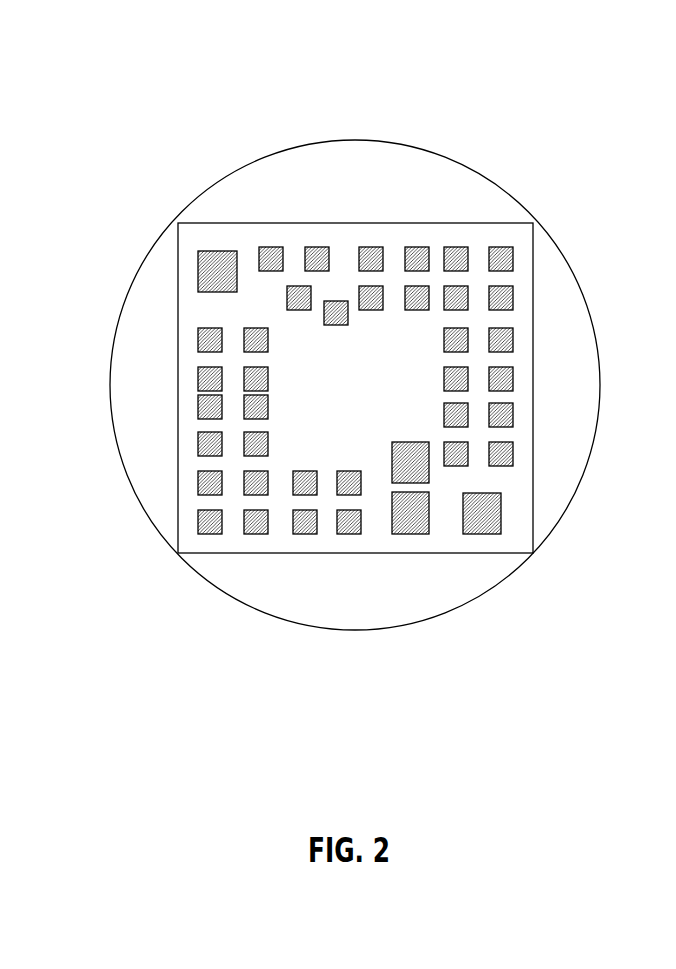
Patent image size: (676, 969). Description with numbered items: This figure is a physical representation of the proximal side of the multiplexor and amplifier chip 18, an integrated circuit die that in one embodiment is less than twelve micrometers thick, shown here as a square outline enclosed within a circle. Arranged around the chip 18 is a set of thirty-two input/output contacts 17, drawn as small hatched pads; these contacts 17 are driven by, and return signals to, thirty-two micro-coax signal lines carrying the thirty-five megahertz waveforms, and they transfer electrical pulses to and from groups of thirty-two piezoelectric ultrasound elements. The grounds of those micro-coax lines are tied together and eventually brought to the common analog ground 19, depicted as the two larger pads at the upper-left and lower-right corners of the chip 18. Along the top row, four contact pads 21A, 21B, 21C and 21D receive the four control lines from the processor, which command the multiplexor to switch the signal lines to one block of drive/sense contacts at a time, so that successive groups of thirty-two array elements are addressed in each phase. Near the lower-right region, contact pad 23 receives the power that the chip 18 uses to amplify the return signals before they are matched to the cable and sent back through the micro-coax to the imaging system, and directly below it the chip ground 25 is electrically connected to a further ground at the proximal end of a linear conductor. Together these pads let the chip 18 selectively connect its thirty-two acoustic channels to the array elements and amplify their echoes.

The input/output contacts 17 is at (513, 293).
The multiplexor chip 18 is at (463, 223).
The analog ground 19 is at (198, 272).
The contact pad 21A is at (264, 248).
The contact pad 21B is at (317, 247).
The contact pad 21C is at (313, 296).
The contact pad 21D is at (347, 303).
The contact pad 23 is at (410, 460).
The chip ground 25 is at (410, 534).